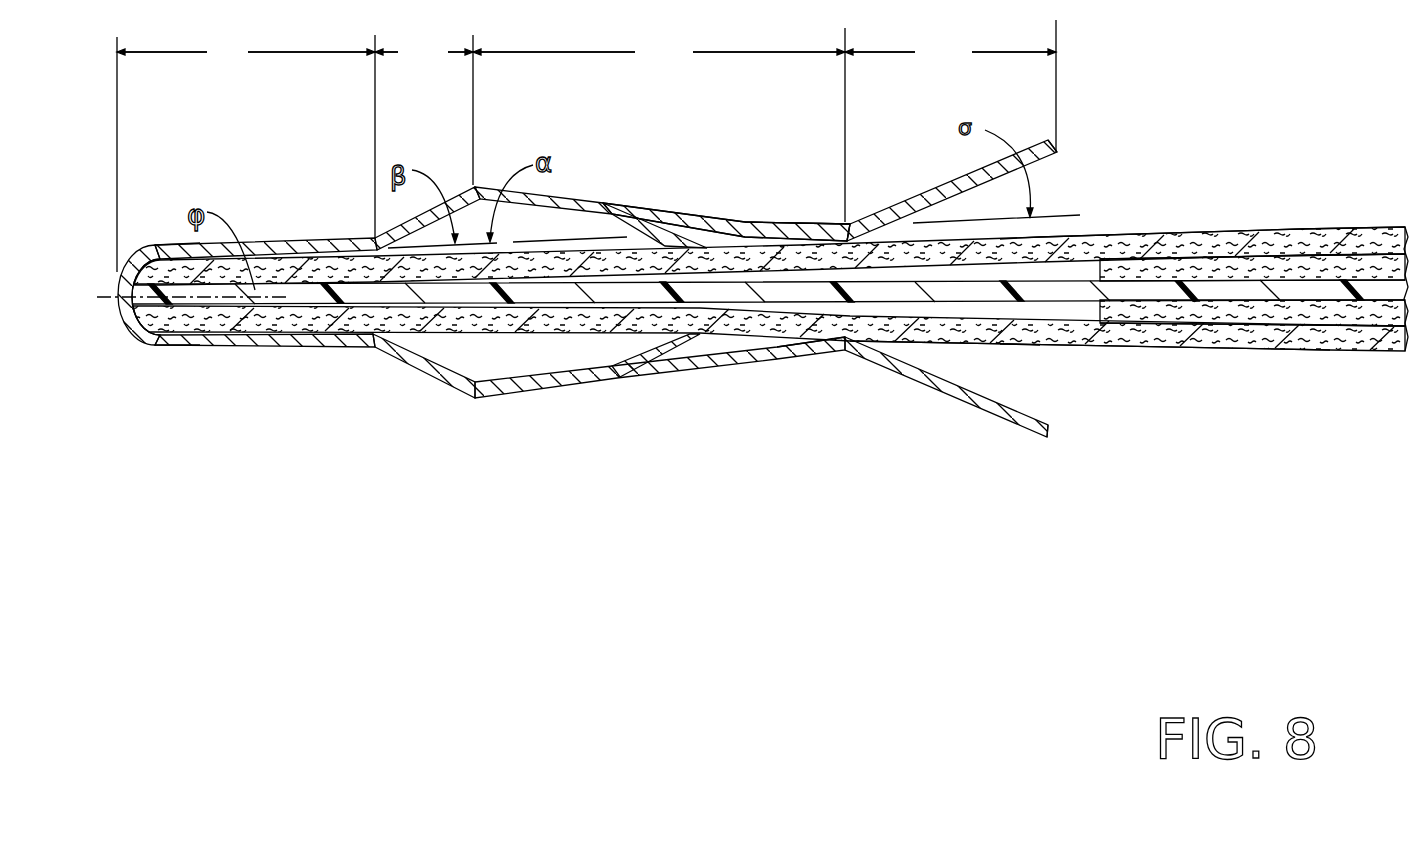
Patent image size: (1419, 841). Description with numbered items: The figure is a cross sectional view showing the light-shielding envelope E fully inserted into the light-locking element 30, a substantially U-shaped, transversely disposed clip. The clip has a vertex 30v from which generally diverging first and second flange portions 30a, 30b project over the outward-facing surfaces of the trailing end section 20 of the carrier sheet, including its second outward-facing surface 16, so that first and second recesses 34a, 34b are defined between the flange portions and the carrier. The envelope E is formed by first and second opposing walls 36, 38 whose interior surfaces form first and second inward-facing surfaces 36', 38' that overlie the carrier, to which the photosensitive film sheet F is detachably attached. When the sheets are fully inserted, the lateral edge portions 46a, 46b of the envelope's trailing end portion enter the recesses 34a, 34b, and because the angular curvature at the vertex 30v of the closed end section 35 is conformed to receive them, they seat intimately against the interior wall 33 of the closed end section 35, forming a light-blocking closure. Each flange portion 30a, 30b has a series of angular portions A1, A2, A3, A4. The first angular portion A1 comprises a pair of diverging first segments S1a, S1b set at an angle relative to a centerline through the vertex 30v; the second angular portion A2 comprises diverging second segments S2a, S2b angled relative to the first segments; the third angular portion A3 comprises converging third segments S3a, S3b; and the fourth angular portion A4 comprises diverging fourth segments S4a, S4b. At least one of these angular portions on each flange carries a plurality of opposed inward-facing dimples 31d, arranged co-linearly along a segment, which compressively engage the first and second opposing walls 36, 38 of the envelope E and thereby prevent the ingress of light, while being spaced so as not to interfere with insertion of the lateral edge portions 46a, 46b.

The light-locking element 30 is at (585, 198).
The first flange portion 30a is at (960, 170).
The second flange portion 30b is at (1017, 424).
The vertex 30v is at (173, 315).
The interior wall 33 is at (125, 278).
The closed end section 35 is at (127, 310).
The lateral edge portion 46a is at (143, 258).
The lateral edge portion 46b is at (143, 333).
The first segment S1a is at (345, 239).
The first segment S1b is at (258, 347).
The second segment S2a is at (470, 187).
The second segment S2b is at (385, 350).
The third segment S3a is at (700, 207).
The third segment S3b is at (622, 378).
The fourth segment S4a is at (897, 203).
The fourth segment S4b is at (943, 397).
The inward-facing dimples 31d is at (660, 215).
The second outward-facing surface 16 is at (790, 237).
The first opposing wall 36 is at (769, 248).
The first inward-facing surface 36' is at (1222, 228).
The second opposing wall 38 is at (769, 337).
The second inward-facing surface 38' is at (1090, 342).
The trailing end section 20 is at (538, 294).
The first recess 34a is at (1058, 180).
The second recess 34b is at (1023, 357).
The light-shielding envelope E is at (1193, 237).
The film sheet F is at (1245, 265).
The first angular portion A1 is at (246, 59).
The second angular portion A2 is at (424, 53).
The third angular portion A3 is at (659, 51).
The fourth angular portion A4 is at (950, 51).